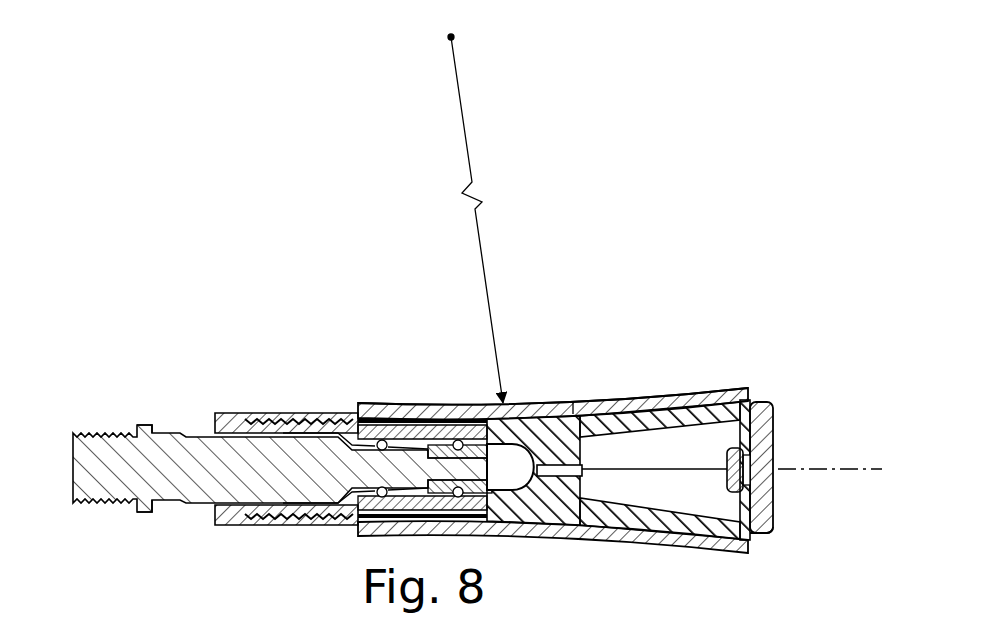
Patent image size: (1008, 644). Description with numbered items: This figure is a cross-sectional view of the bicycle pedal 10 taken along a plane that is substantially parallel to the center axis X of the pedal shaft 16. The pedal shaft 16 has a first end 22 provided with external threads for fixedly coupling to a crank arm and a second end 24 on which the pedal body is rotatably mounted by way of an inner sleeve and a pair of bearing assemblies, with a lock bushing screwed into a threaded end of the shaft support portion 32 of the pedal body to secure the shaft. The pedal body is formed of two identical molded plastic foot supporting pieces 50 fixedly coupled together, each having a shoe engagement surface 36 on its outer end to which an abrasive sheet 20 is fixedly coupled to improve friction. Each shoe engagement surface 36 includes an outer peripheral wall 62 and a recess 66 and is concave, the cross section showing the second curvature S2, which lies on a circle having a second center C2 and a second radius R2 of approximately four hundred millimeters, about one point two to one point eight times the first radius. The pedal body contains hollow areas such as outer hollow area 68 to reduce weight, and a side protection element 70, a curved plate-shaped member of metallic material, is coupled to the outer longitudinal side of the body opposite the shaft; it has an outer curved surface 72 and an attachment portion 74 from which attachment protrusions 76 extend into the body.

The bicycle pedal 10 is at (702, 327).
The pedal shaft 16 is at (146, 420).
The abrasive sheet 20 is at (528, 404).
The first end 22 is at (103, 430).
The second end 24 is at (418, 440).
The shaft support portion 32 is at (305, 412).
The shoe engagement surface 36 is at (649, 396).
The foot supporting piece 50 is at (606, 401).
The outer peripheral wall 62 is at (746, 403).
The recess 66 is at (716, 405).
The outer hollow area 68 is at (710, 505).
The side protection element 70 is at (778, 421).
The outer curved surface 72 is at (774, 530).
The attachment portion 74 is at (752, 476).
The attachment protrusion 76 is at (727, 481).
The second center C2 is at (432, 48).
The second radius R2 is at (481, 220).
The second curvature S2 is at (573, 402).
The center axis X is at (812, 468).